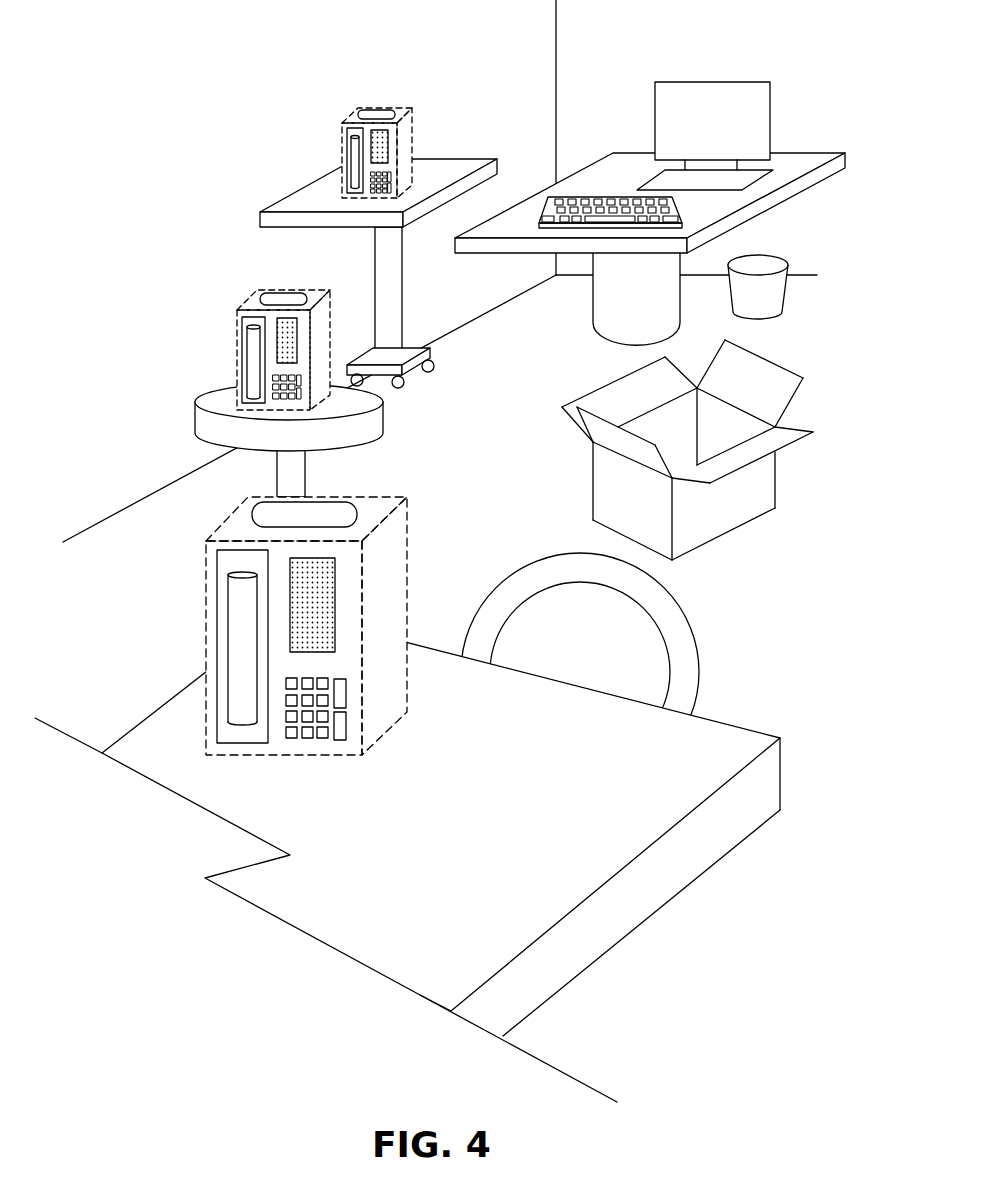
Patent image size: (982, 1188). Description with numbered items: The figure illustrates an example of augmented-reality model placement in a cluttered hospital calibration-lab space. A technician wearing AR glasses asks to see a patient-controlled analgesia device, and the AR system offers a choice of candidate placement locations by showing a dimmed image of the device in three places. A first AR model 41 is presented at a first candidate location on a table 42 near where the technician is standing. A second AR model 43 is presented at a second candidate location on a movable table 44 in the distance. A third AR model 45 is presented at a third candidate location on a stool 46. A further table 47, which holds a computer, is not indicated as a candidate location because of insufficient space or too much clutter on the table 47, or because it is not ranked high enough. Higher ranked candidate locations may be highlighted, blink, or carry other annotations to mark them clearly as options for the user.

The first AR model 41 is at (378, 497).
The table 42 is at (734, 724).
The second AR model 43 is at (380, 107).
The movable table 44 is at (440, 157).
The third AR model 45 is at (312, 290).
The stool 46 is at (212, 383).
The table 47 is at (785, 152).